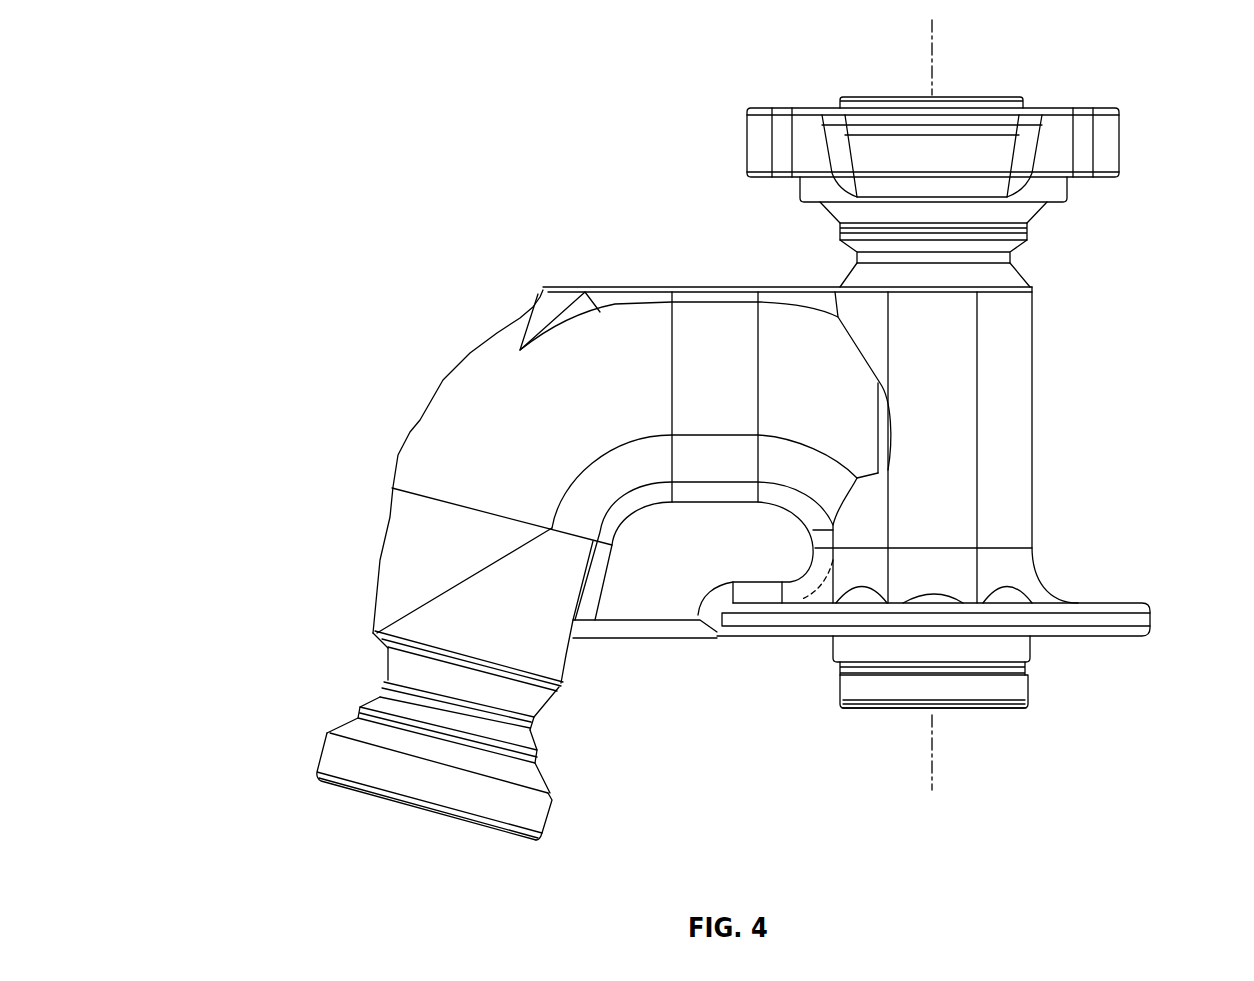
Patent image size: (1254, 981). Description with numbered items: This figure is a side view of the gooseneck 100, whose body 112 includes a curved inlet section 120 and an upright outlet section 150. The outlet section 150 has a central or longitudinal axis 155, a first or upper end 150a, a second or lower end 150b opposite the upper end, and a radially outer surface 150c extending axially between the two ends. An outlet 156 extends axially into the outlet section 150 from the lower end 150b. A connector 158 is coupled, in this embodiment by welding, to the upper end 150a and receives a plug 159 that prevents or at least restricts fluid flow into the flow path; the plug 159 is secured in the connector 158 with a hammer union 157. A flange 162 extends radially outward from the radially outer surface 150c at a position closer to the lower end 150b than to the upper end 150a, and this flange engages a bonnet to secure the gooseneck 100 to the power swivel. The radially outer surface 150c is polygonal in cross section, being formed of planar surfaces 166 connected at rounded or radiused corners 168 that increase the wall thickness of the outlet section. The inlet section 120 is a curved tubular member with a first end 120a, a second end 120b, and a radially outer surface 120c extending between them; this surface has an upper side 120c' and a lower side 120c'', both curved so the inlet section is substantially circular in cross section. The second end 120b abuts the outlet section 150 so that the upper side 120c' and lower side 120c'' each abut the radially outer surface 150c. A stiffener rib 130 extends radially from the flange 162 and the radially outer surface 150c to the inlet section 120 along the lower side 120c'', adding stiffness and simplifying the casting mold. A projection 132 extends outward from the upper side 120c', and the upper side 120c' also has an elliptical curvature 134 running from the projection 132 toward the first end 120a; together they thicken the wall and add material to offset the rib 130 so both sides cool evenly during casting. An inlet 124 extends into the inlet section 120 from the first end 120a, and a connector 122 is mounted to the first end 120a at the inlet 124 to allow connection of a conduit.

The gooseneck 100 is at (333, 158).
The body 112 is at (490, 288).
The inlet section 120 is at (385, 483).
The first end 120a is at (393, 650).
The second end 120b is at (837, 288).
The radially outer surface 120c is at (452, 585).
The upper side 120c' is at (679, 364).
The lower side 120c'' is at (715, 527).
The connector 122 is at (355, 764).
The inlet 124 is at (395, 808).
The stiffener rib 130 is at (641, 600).
The projection 132 is at (654, 286).
The elliptical curvature 134 is at (475, 352).
The outlet section 150 is at (1055, 420).
The upper end 150a is at (1024, 280).
The lower end 150b is at (1012, 720).
The radially outer surface 150c is at (1032, 358).
The longitudinal axis 155 is at (937, 760).
The outlet 156 is at (880, 717).
The hammer union 157 is at (1122, 130).
The connector 158 is at (1028, 213).
The plug 159 is at (988, 97).
The flange 162 is at (1147, 606).
The planar surfaces 166 is at (945, 510).
The corners 168 is at (1010, 472).